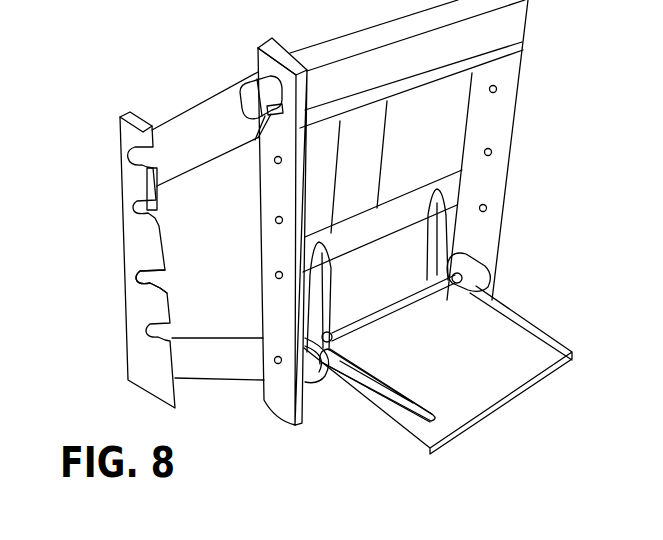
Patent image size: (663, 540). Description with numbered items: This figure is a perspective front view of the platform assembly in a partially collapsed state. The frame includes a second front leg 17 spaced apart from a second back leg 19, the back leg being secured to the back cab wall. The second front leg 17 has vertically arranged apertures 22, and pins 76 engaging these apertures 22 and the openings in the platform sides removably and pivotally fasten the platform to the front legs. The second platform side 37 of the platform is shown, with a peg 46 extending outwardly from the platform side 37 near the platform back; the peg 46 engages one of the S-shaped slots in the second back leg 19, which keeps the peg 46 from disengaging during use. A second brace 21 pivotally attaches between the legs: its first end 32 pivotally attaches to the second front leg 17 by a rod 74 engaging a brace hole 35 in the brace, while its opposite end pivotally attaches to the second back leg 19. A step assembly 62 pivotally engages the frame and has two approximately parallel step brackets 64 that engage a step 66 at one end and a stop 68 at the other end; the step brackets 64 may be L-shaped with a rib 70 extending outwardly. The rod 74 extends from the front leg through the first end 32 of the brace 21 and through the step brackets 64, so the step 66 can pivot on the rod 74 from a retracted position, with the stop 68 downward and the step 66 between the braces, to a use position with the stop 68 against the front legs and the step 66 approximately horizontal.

The second front leg 17 is at (276, 256).
The second back leg 19 is at (138, 319).
The second brace 21 is at (217, 365).
The apertures 22 is at (497, 89).
The first end 32 is at (478, 272).
The brace hole 35 is at (482, 287).
The second platform side 37 is at (198, 124).
The peg 46 is at (138, 158).
The step assembly 62 is at (528, 388).
The step brackets 64 is at (437, 247).
The step 66 is at (437, 382).
The stop 68 is at (389, 214).
The rib 70 is at (373, 381).
The rod 74 is at (407, 308).
The pins 76 is at (258, 142).